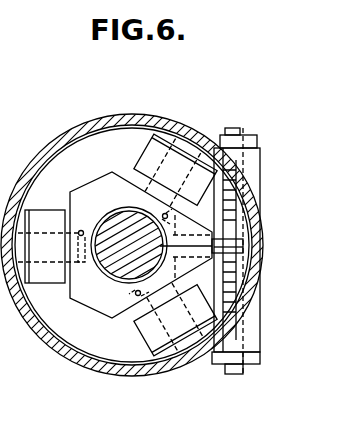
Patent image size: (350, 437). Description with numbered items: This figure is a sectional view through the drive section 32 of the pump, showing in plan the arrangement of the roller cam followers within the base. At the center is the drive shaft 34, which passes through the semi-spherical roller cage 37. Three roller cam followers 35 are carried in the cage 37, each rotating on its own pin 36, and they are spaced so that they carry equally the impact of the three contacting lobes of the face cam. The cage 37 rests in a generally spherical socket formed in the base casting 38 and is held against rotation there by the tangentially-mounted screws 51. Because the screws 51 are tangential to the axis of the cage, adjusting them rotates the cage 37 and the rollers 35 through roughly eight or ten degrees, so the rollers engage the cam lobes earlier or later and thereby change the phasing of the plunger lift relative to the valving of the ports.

The drive section 32 is at (251, 307).
The drive shaft 34 is at (247, 245).
The cam follower 35 is at (160, 152).
The pin 36 is at (198, 125).
The roller cage 37 is at (89, 181).
The base casting 38 is at (248, 208).
The tangentially-mounted screws 51 is at (243, 373).